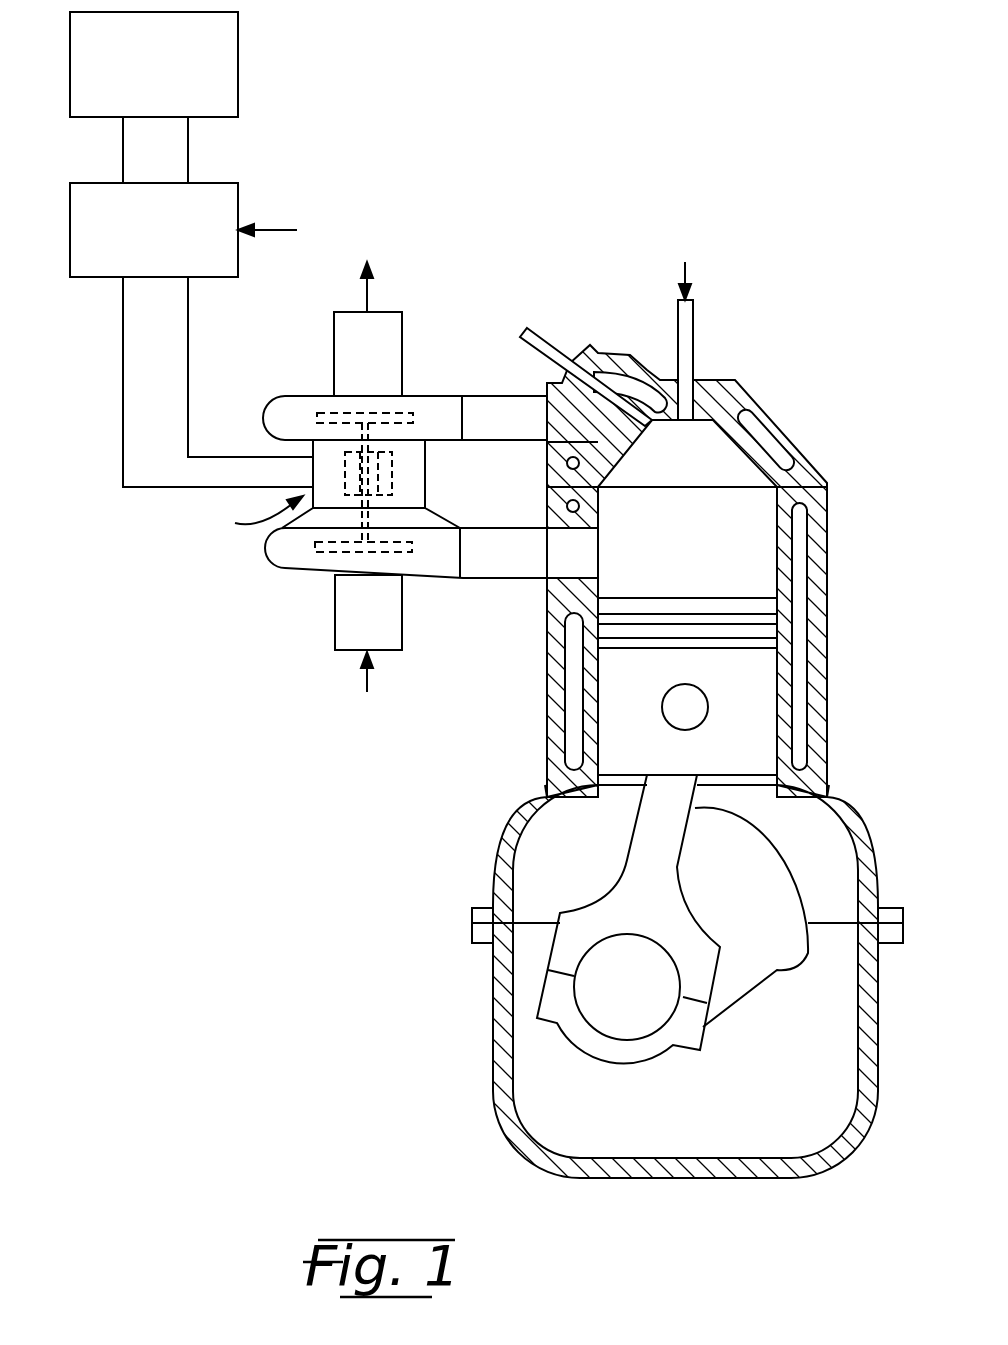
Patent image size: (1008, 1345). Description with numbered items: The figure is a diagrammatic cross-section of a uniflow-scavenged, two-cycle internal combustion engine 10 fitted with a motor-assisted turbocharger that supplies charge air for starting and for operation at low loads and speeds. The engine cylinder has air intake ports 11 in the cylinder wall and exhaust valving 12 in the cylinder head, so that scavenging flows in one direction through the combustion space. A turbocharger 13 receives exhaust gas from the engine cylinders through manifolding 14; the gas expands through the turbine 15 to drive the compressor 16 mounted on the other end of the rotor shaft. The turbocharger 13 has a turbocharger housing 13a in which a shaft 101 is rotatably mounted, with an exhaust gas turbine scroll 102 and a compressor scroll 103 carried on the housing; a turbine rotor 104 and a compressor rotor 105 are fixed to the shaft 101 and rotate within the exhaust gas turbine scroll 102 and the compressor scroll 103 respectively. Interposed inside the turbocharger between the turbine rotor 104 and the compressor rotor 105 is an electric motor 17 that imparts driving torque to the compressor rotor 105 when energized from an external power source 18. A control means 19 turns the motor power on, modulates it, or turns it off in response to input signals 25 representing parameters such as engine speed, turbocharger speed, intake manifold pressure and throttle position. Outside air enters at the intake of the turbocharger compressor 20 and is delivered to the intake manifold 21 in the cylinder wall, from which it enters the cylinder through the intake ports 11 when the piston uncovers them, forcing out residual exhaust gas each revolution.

The two-cycle internal combustion engine 10 is at (793, 442).
The air intake ports 11 is at (545, 553).
The exhaust valving 12 is at (553, 350).
The turbocharger 13 is at (340, 484).
The turbocharger housing 13a is at (313, 449).
The manifolding 14 is at (486, 394).
The turbine 15 is at (287, 412).
The compressor 16 is at (292, 553).
The electric motor 17 is at (393, 473).
The external power source 18 is at (172, 84).
The control means 19 is at (172, 252).
The intake of the turbocharger compressor 20 is at (347, 653).
The intake manifold 21 is at (488, 567).
The input signals 25 is at (278, 230).
The shaft 101 is at (368, 498).
The exhaust gas turbine scroll 102 is at (268, 408).
The compressor scroll 103 is at (265, 546).
The turbine rotor 104 is at (405, 414).
The compressor rotor 105 is at (408, 555).